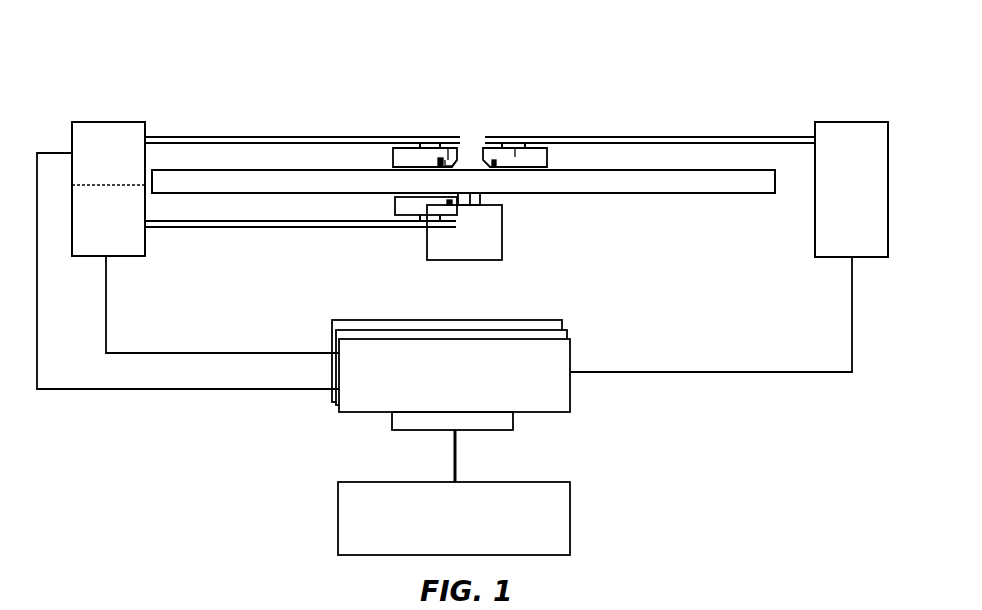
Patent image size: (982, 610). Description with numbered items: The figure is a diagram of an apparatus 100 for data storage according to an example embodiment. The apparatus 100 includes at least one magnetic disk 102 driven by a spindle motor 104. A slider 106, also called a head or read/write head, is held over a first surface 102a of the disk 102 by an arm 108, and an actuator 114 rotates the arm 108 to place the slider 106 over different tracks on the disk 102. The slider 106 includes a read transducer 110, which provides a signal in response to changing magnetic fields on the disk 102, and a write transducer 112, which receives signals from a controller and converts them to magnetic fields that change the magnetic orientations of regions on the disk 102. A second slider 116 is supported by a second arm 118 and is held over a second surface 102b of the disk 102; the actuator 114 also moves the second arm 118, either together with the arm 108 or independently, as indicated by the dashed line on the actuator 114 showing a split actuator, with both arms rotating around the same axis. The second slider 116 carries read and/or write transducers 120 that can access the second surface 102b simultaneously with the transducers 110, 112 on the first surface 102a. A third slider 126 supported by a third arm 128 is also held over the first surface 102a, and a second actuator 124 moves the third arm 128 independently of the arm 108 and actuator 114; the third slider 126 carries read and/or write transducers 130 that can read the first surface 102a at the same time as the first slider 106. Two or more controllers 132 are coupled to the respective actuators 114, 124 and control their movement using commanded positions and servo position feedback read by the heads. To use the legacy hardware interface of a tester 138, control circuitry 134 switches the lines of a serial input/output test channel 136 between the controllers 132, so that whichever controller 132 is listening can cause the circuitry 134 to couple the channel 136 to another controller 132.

The apparatus 100 is at (604, 76).
The magnetic disk 102 is at (463, 177).
The first surface 102a is at (633, 170).
The second surface 102b is at (660, 193).
The spindle motor 104 is at (443, 260).
The slider 106 is at (443, 103).
The arm 108 is at (280, 135).
The read transducer 110 is at (452, 158).
The write transducer 112 is at (440, 158).
The actuator 114 is at (98, 123).
The second slider 116 is at (403, 208).
The second arm 118 is at (267, 226).
The read and/or write transducers 120 is at (482, 199).
The second actuator 124 is at (840, 122).
The third slider 126 is at (545, 126).
The third arm 128 is at (662, 136).
The read and/or write transducers 130 is at (496, 163).
The controllers 132 is at (528, 323).
The control circuitry 134 is at (513, 425).
The serial input/output test channel 136 is at (458, 455).
The tester 138 is at (570, 498).